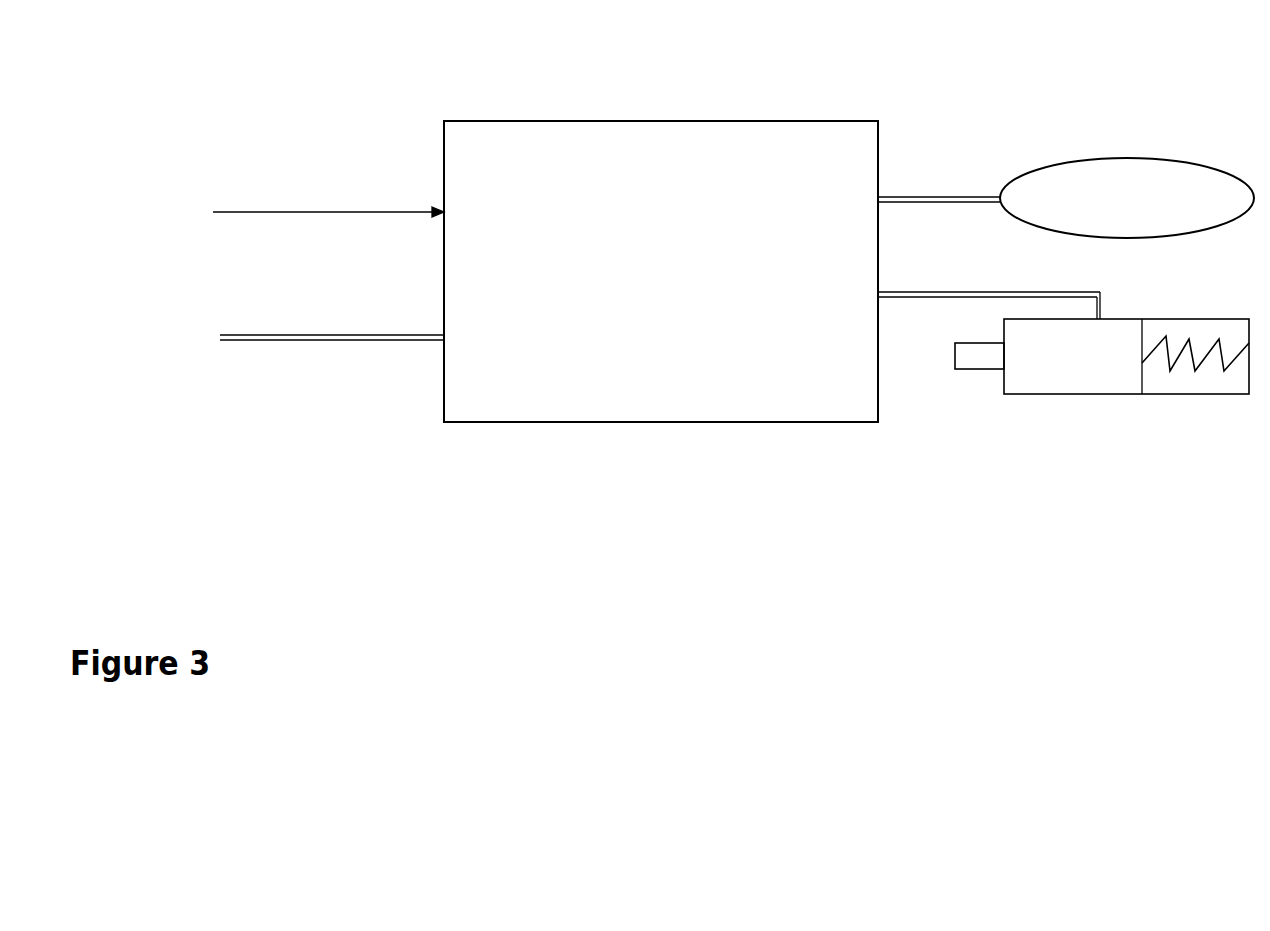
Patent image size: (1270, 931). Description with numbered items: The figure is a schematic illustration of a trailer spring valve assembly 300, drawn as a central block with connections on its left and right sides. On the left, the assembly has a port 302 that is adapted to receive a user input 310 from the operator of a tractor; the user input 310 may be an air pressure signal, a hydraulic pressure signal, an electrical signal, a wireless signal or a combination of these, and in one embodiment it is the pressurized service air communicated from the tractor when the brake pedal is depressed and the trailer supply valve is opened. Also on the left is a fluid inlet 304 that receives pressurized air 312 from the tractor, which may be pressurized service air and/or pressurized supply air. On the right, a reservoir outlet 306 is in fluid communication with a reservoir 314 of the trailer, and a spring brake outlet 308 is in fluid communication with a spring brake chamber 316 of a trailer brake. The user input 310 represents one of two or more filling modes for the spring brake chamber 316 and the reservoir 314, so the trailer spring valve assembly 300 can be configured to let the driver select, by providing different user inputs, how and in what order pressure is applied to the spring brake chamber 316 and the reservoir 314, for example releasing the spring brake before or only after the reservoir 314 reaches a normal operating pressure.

The trailer spring valve assembly 300 is at (677, 278).
The port 302 is at (444, 207).
The fluid inlet 304 is at (448, 336).
The reservoir outlet 306 is at (878, 197).
The spring brake outlet 308 is at (885, 292).
The user input 310 is at (343, 212).
The pressurized air 312 is at (319, 335).
The reservoir 314 is at (1111, 213).
The spring brake chamber 316 is at (1058, 367).